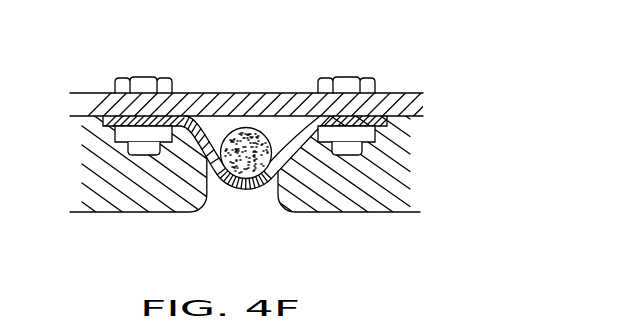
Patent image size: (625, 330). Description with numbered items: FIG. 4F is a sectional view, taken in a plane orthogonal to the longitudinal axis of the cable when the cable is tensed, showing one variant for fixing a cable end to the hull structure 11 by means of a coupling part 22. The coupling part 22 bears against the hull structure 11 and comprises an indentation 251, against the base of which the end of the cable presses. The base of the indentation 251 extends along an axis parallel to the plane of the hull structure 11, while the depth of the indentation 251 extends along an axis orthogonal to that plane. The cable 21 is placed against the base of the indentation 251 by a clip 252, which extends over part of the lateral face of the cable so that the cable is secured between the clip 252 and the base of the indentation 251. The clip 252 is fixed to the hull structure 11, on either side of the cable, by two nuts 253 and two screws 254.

The hull structure 11 is at (112, 104).
The ball 21 is at (250, 145).
The coupling part 22 is at (154, 184).
The indentation 251 is at (265, 196).
The clip 252 is at (292, 131).
The nuts 253 is at (160, 135).
The screws 254 is at (145, 86).